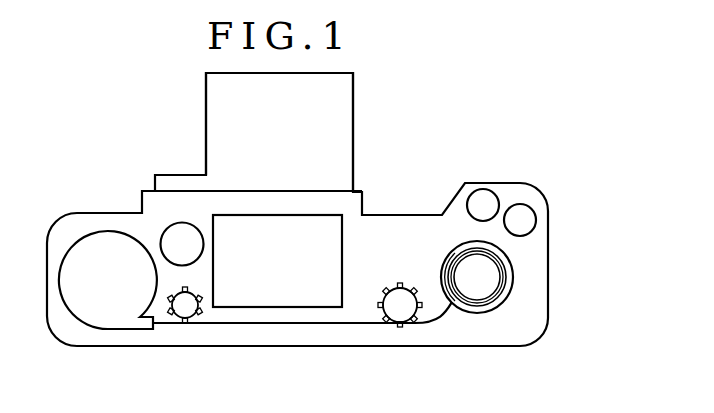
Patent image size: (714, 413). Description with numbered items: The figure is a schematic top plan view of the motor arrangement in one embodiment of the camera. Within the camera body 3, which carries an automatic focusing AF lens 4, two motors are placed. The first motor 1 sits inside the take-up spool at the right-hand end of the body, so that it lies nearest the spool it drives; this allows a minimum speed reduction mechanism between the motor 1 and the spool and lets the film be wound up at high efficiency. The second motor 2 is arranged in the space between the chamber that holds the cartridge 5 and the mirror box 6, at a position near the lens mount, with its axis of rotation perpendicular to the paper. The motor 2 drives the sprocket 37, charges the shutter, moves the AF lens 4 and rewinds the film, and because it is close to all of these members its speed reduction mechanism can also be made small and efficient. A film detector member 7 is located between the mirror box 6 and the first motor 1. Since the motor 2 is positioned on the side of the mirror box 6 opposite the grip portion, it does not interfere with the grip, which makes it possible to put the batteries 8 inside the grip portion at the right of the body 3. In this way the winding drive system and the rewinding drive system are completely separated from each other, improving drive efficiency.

The first motor 1 is at (495, 275).
The second motor 2 is at (180, 225).
The camera body 3 is at (407, 218).
The AF lens 4 is at (343, 104).
The cartridge 5 is at (108, 238).
The mirror box 6 is at (345, 257).
The film detector member 7 is at (393, 293).
The batteries 8 is at (520, 212).
The sprocket 37 is at (180, 313).